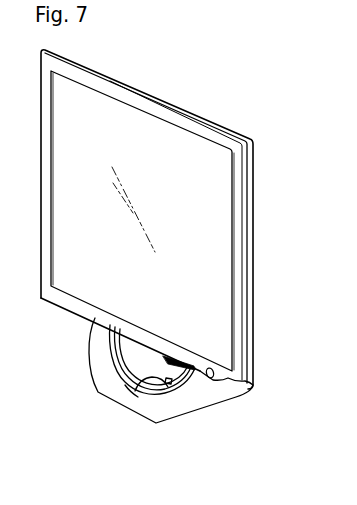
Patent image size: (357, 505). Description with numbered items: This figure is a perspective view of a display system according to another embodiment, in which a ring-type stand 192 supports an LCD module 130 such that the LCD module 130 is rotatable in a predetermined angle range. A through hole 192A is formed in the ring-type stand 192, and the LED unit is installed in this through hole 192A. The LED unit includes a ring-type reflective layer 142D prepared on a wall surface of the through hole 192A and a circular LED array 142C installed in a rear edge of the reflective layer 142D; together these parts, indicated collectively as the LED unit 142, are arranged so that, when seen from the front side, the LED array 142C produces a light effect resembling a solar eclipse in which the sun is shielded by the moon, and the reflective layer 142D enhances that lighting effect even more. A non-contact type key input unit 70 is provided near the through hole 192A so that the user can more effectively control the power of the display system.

The LCD module 130 is at (248, 272).
The ring-type stand 192 is at (227, 393).
The through hole 192A is at (138, 366).
The non-contact type key input unit 70 is at (143, 390).
The hinge assembly 142 is at (163, 440).
The circular LED array 142C is at (133, 397).
The ring-type reflective layer 142D is at (160, 395).